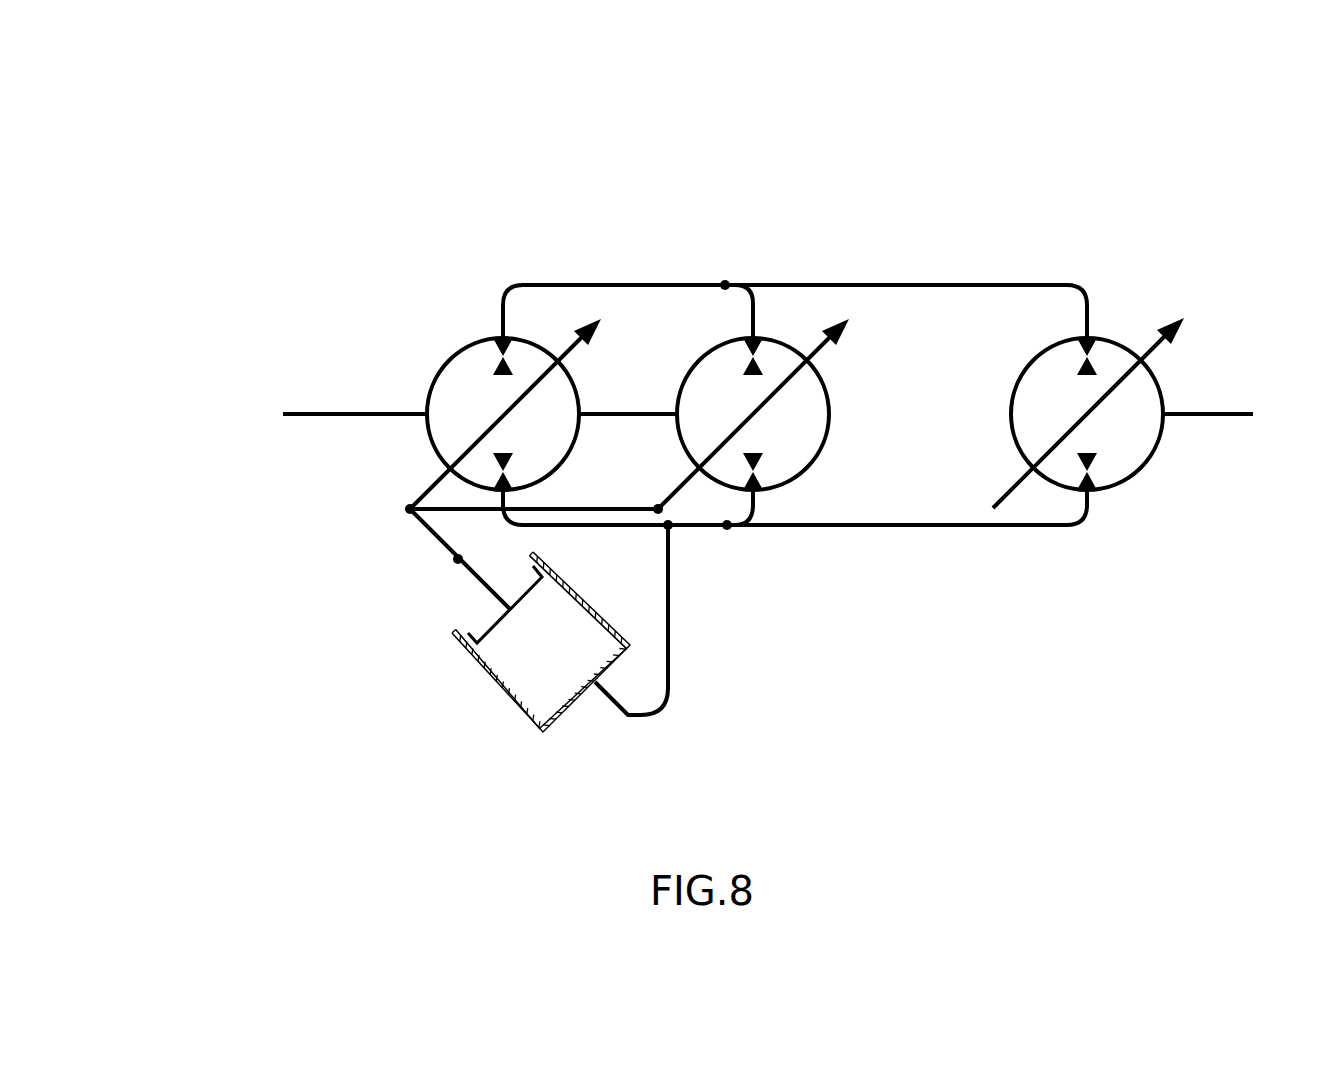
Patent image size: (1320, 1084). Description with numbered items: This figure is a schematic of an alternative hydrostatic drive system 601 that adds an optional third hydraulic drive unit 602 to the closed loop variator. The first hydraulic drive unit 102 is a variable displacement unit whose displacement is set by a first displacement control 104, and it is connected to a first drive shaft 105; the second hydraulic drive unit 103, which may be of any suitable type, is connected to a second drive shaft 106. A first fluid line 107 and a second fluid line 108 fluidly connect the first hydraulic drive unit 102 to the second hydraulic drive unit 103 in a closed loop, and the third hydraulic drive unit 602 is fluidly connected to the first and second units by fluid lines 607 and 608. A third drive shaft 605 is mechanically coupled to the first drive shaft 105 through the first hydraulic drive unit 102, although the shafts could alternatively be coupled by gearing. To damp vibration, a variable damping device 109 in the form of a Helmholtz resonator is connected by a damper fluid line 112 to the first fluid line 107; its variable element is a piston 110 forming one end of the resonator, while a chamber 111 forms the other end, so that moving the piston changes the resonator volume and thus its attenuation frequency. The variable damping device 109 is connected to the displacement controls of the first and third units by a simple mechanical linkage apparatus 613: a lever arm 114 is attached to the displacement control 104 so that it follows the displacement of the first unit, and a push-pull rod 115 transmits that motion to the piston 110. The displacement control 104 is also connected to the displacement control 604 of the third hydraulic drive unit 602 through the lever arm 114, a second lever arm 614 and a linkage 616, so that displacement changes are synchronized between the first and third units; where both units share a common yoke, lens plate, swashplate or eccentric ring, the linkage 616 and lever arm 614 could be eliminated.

The hydraulic system 601 is at (240, 152).
The first hydraulic drive unit 102 is at (437, 375).
The second hydraulic drive unit 103 is at (1127, 340).
The first displacement control 104 is at (560, 360).
The first drive shaft 105 is at (343, 411).
The second drive shaft 106 is at (1210, 414).
The first fluid line 107 is at (692, 524).
The second fluid line 108 is at (597, 285).
The variable damping device 109 is at (401, 679).
The piston 110 is at (493, 623).
The chamber 111 is at (508, 698).
The damper fluid line 112 is at (668, 688).
The lever arm 114 is at (423, 492).
The push-pull rod 115 is at (405, 510).
The third hydraulic drive unit 602 is at (702, 355).
The displacement control 604 is at (807, 343).
The third drive shaft 605 is at (660, 413).
The fluid line 607 is at (937, 524).
The fluid line 608 is at (915, 285).
The mechanical linkage apparatus 613 is at (290, 557).
The lever arm 614 is at (672, 485).
The linkage 616 is at (600, 508).